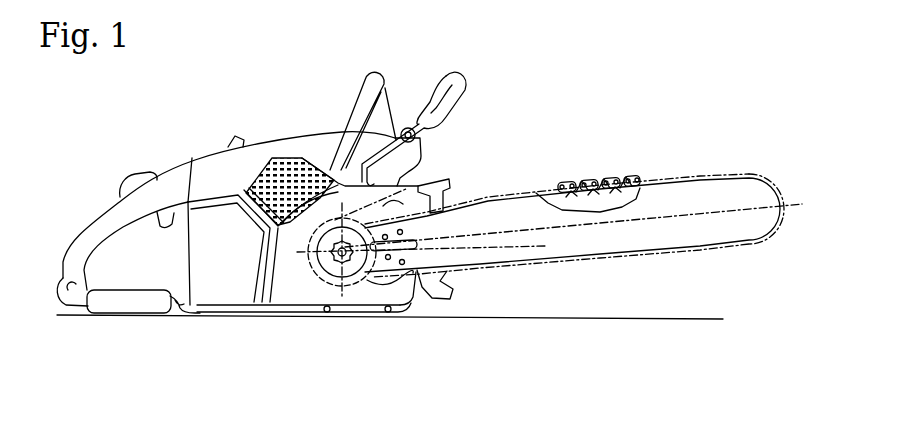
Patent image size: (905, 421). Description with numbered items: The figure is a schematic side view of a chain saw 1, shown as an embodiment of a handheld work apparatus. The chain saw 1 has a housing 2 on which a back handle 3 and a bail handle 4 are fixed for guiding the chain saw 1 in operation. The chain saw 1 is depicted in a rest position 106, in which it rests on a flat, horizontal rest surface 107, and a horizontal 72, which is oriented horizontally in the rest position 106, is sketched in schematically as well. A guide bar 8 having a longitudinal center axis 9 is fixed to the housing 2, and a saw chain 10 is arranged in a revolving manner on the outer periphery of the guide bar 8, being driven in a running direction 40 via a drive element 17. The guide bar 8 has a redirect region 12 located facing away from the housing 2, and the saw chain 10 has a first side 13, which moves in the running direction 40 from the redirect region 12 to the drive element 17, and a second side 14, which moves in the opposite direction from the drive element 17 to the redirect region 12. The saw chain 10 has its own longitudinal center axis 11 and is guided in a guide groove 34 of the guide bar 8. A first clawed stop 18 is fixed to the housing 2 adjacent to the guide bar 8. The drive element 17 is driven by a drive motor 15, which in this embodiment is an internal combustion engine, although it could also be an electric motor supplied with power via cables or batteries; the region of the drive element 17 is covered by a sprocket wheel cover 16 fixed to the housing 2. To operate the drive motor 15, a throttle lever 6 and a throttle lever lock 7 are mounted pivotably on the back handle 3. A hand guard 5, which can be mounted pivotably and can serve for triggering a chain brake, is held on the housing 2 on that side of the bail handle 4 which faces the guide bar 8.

The chain saw 1 is at (632, 73).
The housing 2 is at (268, 150).
The back handle 3 is at (110, 228).
The bail handle 4 is at (367, 95).
The hand guard 5 is at (457, 78).
The throttle lever 6 is at (166, 215).
The throttle lever lock 7 is at (130, 182).
The guide bar 8 is at (720, 192).
The longitudinal center axis 9 is at (533, 232).
The saw chain 10 is at (618, 170).
The longitudinal center axis 11 is at (669, 182).
The redirect region 12 is at (780, 178).
The first side 13 is at (605, 272).
The second side 14 is at (488, 196).
The drive motor 15 is at (307, 156).
The sprocket wheel cover 16 is at (304, 292).
The drive element 17 is at (350, 262).
The first clawed stop 18 is at (433, 293).
The guide groove 34 is at (548, 198).
The running direction 40 is at (728, 255).
The horizontal 72 is at (474, 252).
The rest position 106 is at (220, 72).
The rest surface 107 is at (712, 318).